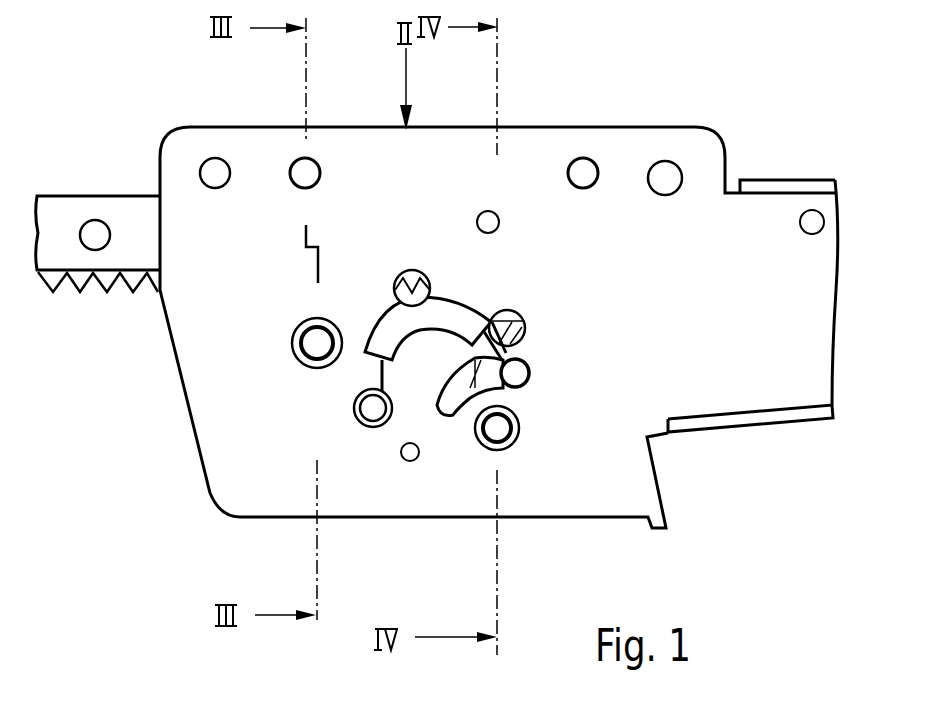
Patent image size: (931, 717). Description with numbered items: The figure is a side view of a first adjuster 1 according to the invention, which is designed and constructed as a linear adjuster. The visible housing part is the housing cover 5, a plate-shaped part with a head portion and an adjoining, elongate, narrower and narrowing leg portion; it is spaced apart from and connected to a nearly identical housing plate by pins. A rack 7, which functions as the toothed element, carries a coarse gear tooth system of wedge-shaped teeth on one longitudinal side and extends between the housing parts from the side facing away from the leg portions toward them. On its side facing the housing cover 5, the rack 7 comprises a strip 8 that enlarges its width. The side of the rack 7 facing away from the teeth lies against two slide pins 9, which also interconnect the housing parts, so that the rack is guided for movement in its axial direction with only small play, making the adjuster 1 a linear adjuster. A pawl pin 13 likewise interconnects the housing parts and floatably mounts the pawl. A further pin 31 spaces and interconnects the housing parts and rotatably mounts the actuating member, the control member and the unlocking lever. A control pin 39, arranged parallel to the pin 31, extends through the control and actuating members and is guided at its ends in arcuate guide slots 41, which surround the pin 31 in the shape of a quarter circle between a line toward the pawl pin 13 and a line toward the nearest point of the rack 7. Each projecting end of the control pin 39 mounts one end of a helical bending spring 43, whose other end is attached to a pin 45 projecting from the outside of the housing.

The adjuster 1 is at (148, 113).
The housing cover 5 is at (190, 343).
The rack 7 is at (100, 292).
The strip 8 is at (68, 217).
The slide pins 9 is at (306, 176).
The pawl pin 13 is at (310, 347).
The pin 31 is at (500, 432).
The control pin 39 is at (530, 382).
The guide slots 41 is at (450, 398).
The helical bending spring 43 is at (393, 337).
The pins 45 is at (372, 410).